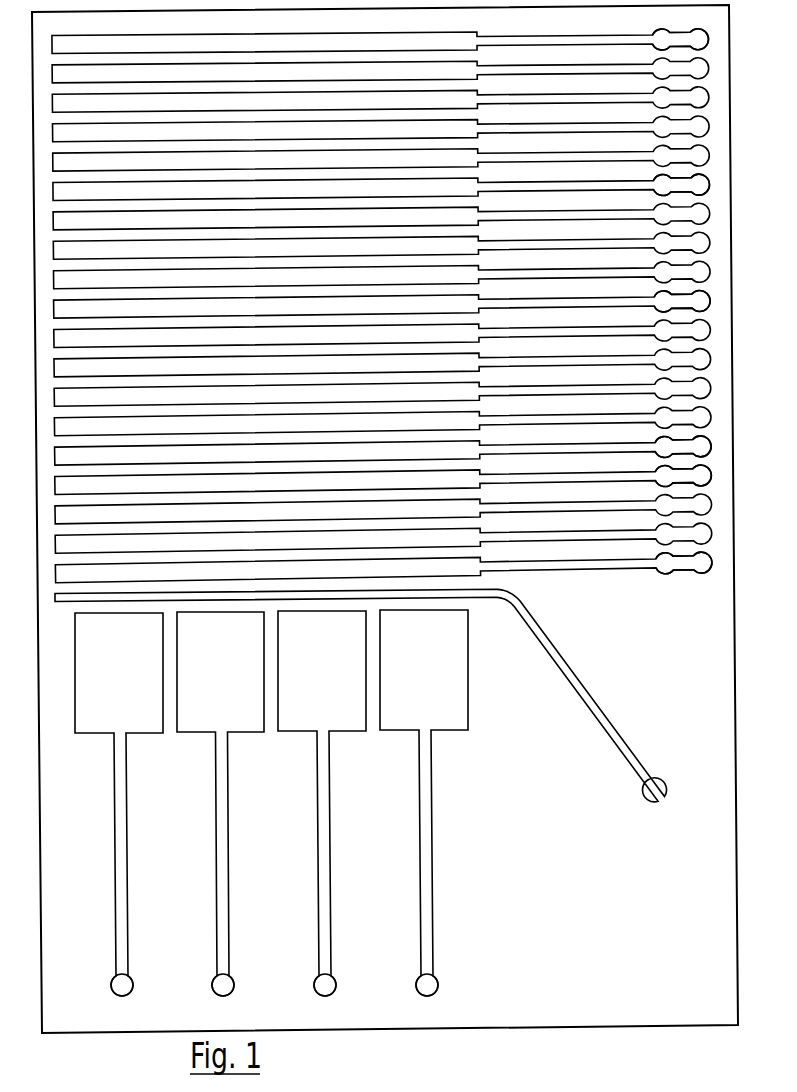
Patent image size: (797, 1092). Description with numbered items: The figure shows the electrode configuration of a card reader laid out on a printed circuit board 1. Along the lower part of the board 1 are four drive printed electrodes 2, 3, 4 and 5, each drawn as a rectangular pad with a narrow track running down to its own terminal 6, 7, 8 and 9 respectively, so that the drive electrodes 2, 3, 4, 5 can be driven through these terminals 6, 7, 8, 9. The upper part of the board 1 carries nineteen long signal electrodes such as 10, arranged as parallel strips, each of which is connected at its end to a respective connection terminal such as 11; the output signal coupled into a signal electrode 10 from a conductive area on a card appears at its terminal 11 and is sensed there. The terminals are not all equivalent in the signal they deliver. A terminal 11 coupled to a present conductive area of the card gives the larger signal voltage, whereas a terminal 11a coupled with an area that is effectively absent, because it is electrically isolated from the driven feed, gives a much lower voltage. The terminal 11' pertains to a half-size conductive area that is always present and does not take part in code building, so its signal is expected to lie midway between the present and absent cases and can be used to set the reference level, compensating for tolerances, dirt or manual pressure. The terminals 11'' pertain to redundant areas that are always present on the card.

The printed circuit board 1 is at (731, 595).
The signal electrode 10 is at (55, 483).
The connection terminal 11 is at (712, 451).
The terminal 11a is at (668, 190).
The terminal 11' is at (710, 296).
The terminal 11'' is at (712, 294).
The drive printed electrode 2 is at (393, 735).
The drive printed electrode 3 is at (292, 736).
The drive printed electrode 4 is at (190, 737).
The drive printed electrode 5 is at (90, 738).
The terminal 6 is at (438, 985).
The terminal 7 is at (336, 985).
The terminal 8 is at (234, 985).
The terminal 9 is at (133, 985).